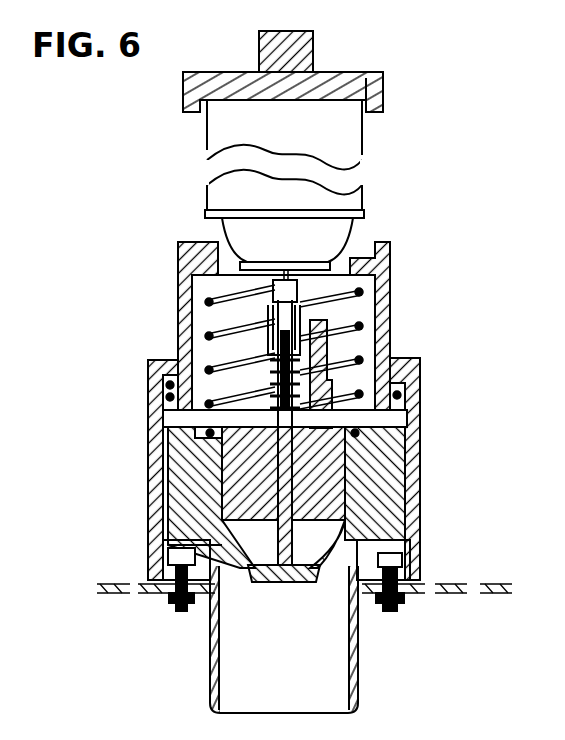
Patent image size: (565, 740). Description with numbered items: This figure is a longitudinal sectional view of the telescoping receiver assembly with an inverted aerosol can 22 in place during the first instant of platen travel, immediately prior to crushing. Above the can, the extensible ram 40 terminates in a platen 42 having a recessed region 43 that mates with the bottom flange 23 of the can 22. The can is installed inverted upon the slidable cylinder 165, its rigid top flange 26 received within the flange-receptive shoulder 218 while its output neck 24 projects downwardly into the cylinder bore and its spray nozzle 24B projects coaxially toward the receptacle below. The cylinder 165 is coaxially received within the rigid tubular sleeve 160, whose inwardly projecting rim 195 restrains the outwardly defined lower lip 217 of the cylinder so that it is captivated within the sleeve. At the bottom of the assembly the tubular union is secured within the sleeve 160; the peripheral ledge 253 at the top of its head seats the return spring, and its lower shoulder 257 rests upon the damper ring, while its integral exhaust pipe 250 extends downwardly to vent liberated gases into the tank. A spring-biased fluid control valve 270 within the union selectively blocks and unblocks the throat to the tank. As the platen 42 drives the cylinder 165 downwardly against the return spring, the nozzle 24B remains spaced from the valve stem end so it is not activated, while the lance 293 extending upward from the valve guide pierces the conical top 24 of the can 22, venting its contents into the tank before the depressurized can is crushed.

The extensible ram 40 is at (315, 44).
The platen 42 is at (362, 72).
The recessed region 43 is at (385, 82).
The can 22 is at (365, 130).
The bottom flange 23 is at (365, 153).
The rigid top flange 26 is at (364, 213).
The output neck 24 is at (358, 229).
The spray nozzle 24B is at (298, 283).
The slidable cylinder 165 is at (393, 302).
The flange-receptive shoulder 218 is at (210, 241).
The inwardly projecting rim 195 is at (168, 358).
The lance 293 is at (330, 345).
The tubular sleeve 160 is at (425, 513).
The lower lip 217 is at (408, 415).
The peripheral ledge 253 is at (405, 478).
The lower shoulder 257 is at (145, 550).
The fluid control valve 270 is at (302, 585).
The exhaust pipe 250 is at (360, 660).